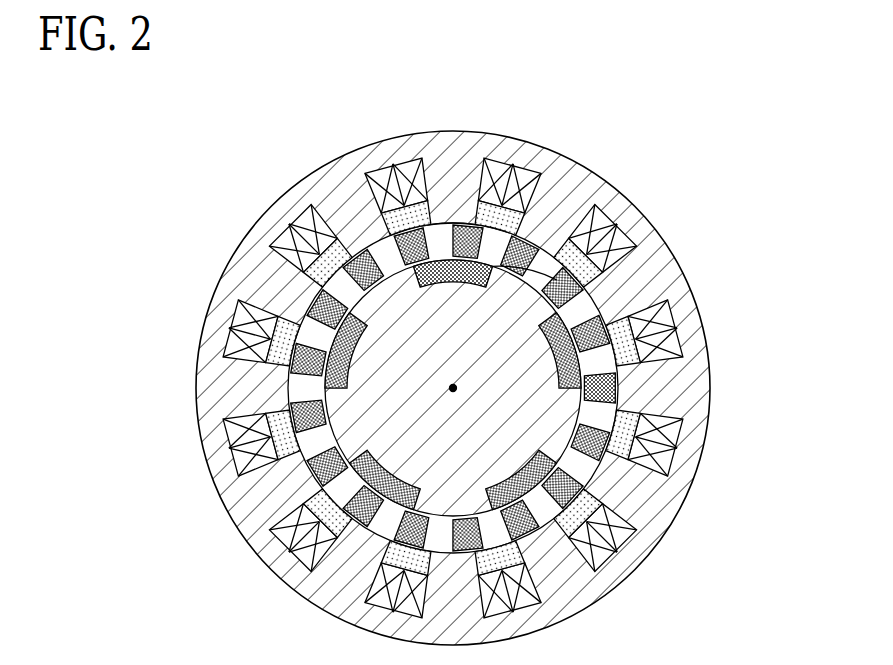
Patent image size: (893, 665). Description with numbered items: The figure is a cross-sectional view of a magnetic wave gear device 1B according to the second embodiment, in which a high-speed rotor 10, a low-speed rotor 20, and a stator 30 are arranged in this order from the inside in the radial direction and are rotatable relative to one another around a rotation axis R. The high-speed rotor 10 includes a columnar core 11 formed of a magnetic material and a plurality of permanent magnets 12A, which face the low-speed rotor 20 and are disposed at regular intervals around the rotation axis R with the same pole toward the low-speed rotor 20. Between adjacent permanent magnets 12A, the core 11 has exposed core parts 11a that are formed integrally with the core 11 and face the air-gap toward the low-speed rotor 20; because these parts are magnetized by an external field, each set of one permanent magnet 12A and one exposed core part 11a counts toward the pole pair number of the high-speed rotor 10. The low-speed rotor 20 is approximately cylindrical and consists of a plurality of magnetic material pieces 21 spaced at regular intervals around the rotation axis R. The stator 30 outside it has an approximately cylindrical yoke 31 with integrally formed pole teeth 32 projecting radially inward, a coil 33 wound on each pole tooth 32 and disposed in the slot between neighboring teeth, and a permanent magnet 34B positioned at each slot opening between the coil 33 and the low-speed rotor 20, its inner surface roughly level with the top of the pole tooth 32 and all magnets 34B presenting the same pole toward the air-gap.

The magnetic wave gear device 1B is at (150, 191).
The high-speed rotor 10 is at (313, 388).
The core 11 is at (521, 433).
The exposed core part 11a is at (527, 293).
The permanent magnet 12A is at (443, 266).
The low-speed rotor 20 is at (276, 370).
The magnetic material piece 21 is at (544, 243).
The stator 30 is at (193, 307).
The yoke 31 is at (533, 141).
The pole tooth 32 is at (450, 227).
The coil 33 is at (500, 166).
The permanent magnet 34B is at (521, 224).
The rotation axis R is at (456, 391).